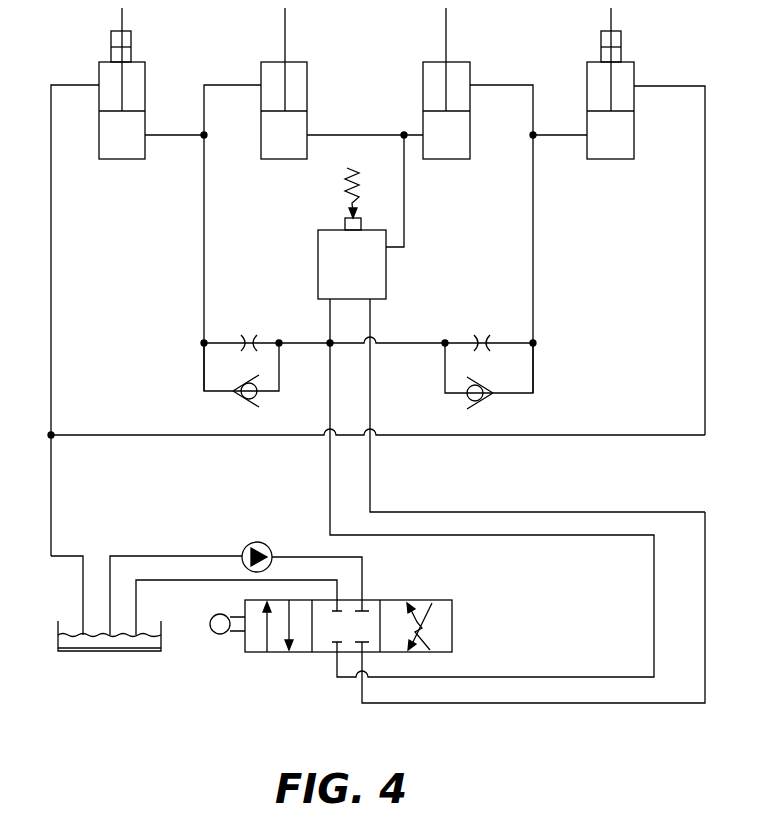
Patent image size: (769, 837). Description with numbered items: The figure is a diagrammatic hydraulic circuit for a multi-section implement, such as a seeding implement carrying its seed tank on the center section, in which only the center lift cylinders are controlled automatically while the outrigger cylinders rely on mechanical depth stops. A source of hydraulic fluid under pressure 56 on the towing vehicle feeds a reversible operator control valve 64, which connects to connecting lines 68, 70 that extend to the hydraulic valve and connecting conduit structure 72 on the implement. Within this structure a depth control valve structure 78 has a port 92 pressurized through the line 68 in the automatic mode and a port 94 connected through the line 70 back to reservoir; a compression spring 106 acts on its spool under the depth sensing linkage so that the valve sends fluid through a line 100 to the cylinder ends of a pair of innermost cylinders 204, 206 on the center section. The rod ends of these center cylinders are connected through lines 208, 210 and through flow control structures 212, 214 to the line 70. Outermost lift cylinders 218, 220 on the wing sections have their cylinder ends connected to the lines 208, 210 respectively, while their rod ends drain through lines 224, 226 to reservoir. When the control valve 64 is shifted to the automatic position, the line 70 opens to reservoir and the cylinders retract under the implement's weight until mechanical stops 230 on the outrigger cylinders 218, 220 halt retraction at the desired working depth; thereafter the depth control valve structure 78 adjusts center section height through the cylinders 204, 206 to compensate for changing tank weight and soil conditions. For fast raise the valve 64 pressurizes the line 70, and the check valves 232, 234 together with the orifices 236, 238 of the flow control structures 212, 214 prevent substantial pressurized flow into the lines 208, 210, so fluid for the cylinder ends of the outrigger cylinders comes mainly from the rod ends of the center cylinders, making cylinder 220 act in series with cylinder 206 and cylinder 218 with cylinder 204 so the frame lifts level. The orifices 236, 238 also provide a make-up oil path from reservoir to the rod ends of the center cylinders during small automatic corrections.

The source of hydraulic fluid under pressure 56 is at (86, 670).
The reversible operator control valve 64 is at (266, 668).
The connecting line 68 is at (372, 468).
The connecting line 70 is at (330, 468).
The hydraulic valve and connecting conduit structure 72 is at (672, 480).
The depth control valve structure 78 is at (314, 212).
The port 92 is at (370, 321).
The port 94 is at (330, 321).
The line 100 is at (406, 226).
The compression spring 106 is at (355, 182).
The innermost cylinder 204 is at (458, 62).
The innermost cylinder 206 is at (298, 62).
The line 208 is at (533, 227).
The line 210 is at (204, 227).
The flow control structure 212 is at (435, 342).
The flow control structure 214 is at (256, 342).
The outermost lift cylinder 218 is at (632, 62).
The outermost lift cylinder 220 is at (145, 62).
The line 224 is at (705, 227).
The line 226 is at (51, 227).
The mechanical stop 230 is at (111, 48).
The check valve 232 is at (483, 399).
The check valve 234 is at (244, 398).
The orifice 236 is at (478, 338).
The orifice 238 is at (250, 338).